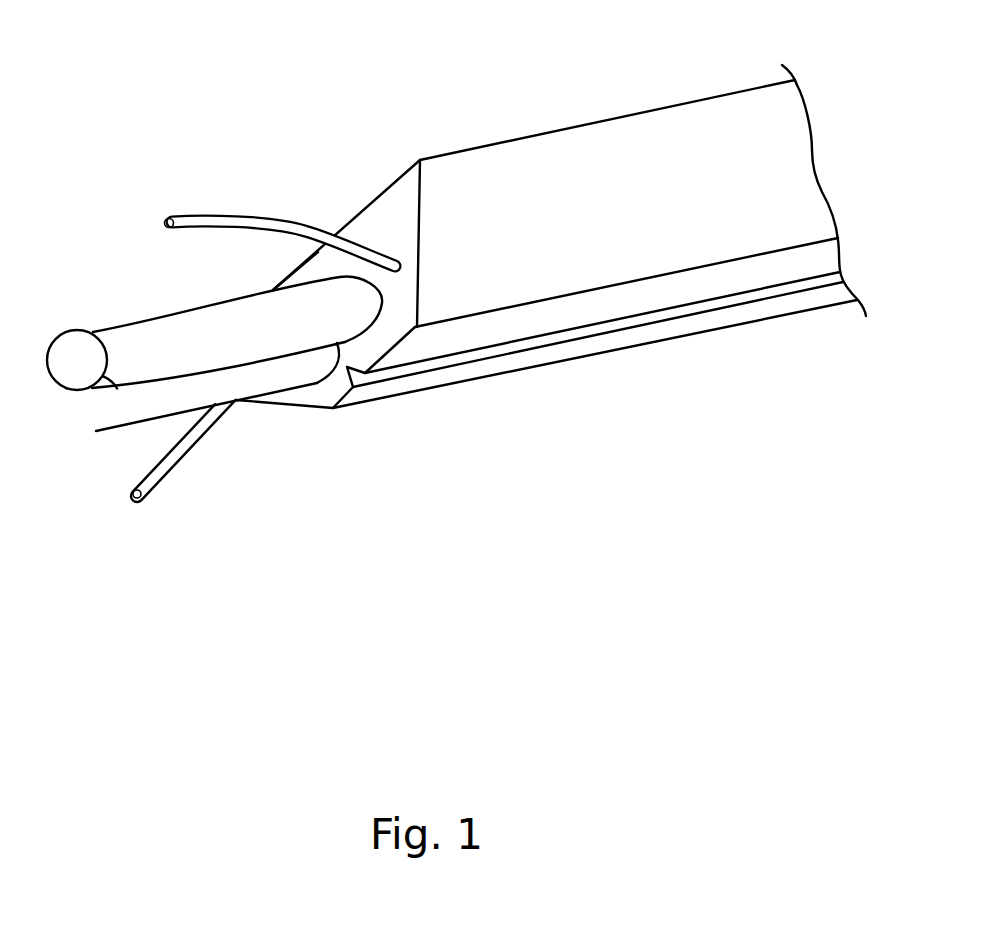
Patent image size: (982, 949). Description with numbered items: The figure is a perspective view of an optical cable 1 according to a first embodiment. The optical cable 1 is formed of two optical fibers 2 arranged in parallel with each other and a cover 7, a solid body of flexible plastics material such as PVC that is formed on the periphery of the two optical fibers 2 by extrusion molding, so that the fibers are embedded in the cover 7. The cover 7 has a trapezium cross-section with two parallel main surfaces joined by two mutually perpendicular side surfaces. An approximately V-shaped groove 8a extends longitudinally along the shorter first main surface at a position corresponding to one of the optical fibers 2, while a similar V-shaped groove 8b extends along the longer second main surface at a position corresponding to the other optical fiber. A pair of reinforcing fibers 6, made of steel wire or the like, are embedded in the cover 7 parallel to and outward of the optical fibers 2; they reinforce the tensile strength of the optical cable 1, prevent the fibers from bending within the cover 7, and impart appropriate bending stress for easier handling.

The optical cable 1 is at (510, 237).
The optical fibers 2 is at (125, 335).
The reinforcing fibers 6 is at (221, 213).
The cover 7 is at (400, 205).
The groove 8a is at (453, 353).
The groove 8b is at (304, 264).